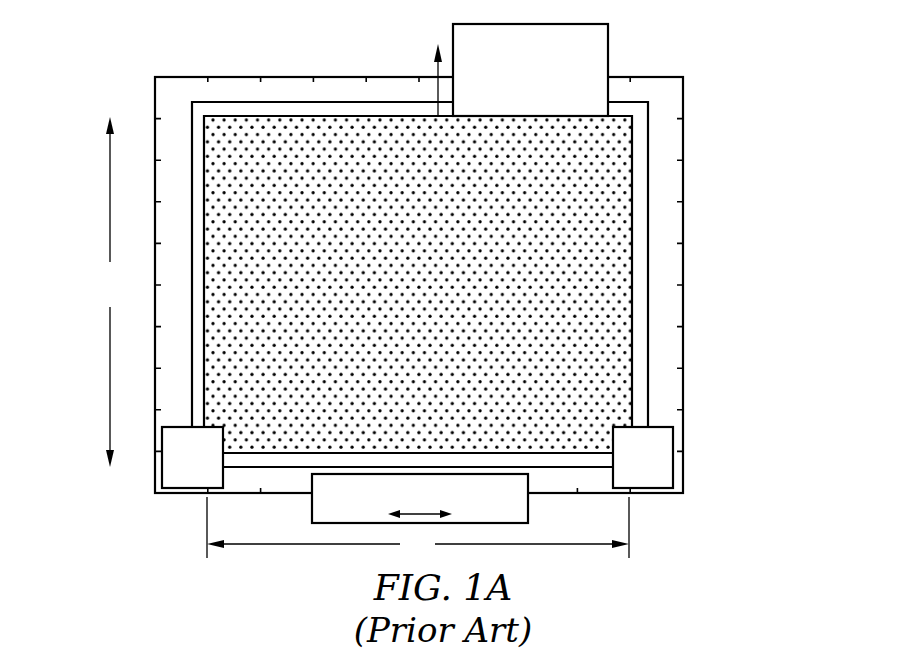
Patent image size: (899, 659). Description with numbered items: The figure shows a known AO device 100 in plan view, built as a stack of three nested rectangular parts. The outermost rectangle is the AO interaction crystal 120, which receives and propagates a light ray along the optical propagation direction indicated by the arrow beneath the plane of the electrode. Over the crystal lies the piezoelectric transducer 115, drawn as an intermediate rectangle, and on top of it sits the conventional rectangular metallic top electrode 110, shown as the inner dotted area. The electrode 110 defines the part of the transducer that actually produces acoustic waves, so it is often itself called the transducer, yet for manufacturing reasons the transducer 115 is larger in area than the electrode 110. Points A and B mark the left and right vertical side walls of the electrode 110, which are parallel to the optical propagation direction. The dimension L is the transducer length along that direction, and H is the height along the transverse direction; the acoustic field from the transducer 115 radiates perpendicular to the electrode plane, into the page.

The AO device 100 is at (103, 58).
The top electrode 110 is at (632, 262).
The piezoelectric transducer 115 is at (641, 212).
The AO interaction crystal 120 is at (670, 137).